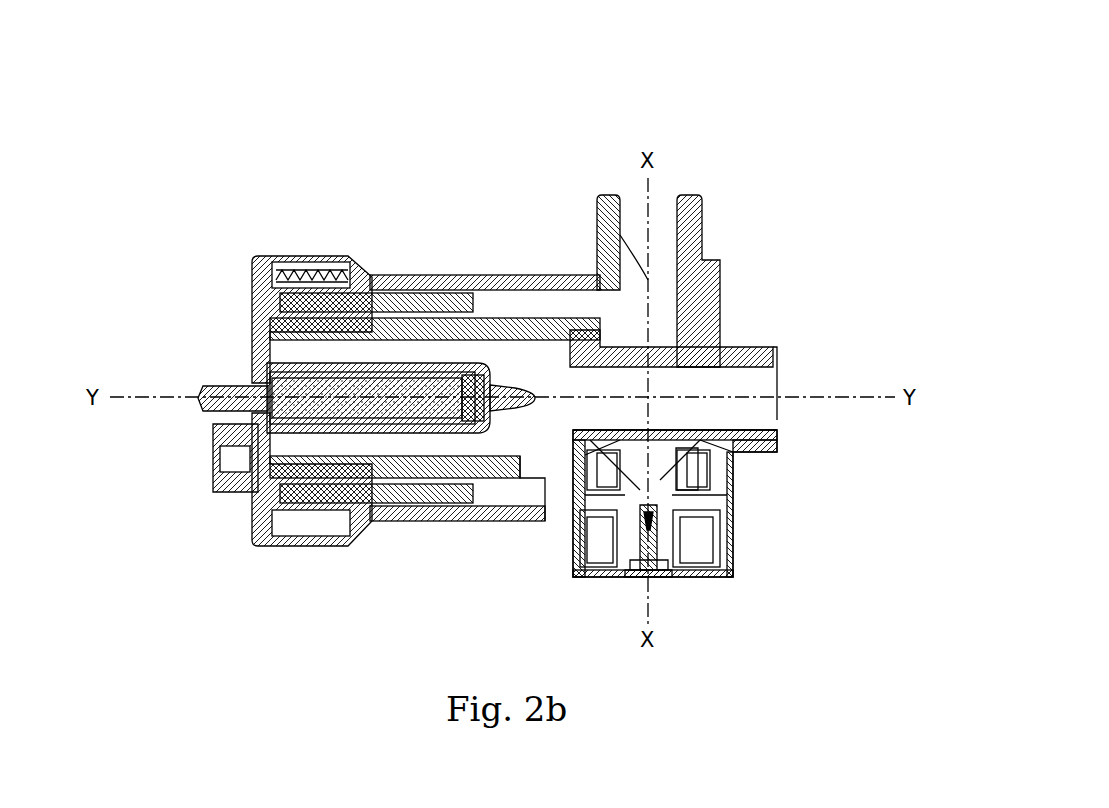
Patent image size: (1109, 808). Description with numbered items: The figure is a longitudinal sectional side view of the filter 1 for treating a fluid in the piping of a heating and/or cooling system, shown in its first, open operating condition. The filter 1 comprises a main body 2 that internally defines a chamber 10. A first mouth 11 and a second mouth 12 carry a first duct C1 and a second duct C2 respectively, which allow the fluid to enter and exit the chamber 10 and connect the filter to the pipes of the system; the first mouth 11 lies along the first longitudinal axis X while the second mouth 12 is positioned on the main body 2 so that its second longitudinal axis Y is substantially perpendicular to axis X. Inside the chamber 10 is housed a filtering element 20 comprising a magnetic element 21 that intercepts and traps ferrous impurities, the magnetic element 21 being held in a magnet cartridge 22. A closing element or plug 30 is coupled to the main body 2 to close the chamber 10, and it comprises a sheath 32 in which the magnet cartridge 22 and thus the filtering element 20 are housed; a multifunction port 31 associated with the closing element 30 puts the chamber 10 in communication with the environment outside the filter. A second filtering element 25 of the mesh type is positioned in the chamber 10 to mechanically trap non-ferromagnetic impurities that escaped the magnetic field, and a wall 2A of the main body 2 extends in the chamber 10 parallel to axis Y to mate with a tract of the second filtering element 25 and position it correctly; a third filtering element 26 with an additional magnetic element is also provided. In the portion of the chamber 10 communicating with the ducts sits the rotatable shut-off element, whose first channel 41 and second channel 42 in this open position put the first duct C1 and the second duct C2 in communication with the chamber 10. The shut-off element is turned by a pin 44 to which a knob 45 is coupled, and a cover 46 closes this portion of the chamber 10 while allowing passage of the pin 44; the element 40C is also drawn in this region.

The filter 1 is at (437, 165).
The main body 2 is at (523, 275).
The wall 2A is at (571, 330).
The chamber 10 is at (495, 310).
The first mouth 11 is at (697, 218).
The second mouth 12 is at (750, 440).
The filtering element 20 is at (446, 362).
The magnetic element 21 is at (433, 405).
The magnet cartridge 22 is at (400, 408).
The second filtering element 25 is at (385, 335).
The third filtering element 26 is at (326, 310).
The closing element 30 is at (262, 285).
The port 31 is at (235, 457).
The sheath 32 is at (487, 432).
The flange 40C is at (670, 415).
The first channel 41 is at (615, 285).
The second channel 42 is at (630, 405).
The pin 44 is at (640, 470).
The knob 45 is at (688, 570).
The cover 46 is at (697, 497).
The first duct C1 is at (666, 232).
The second duct C2 is at (753, 383).